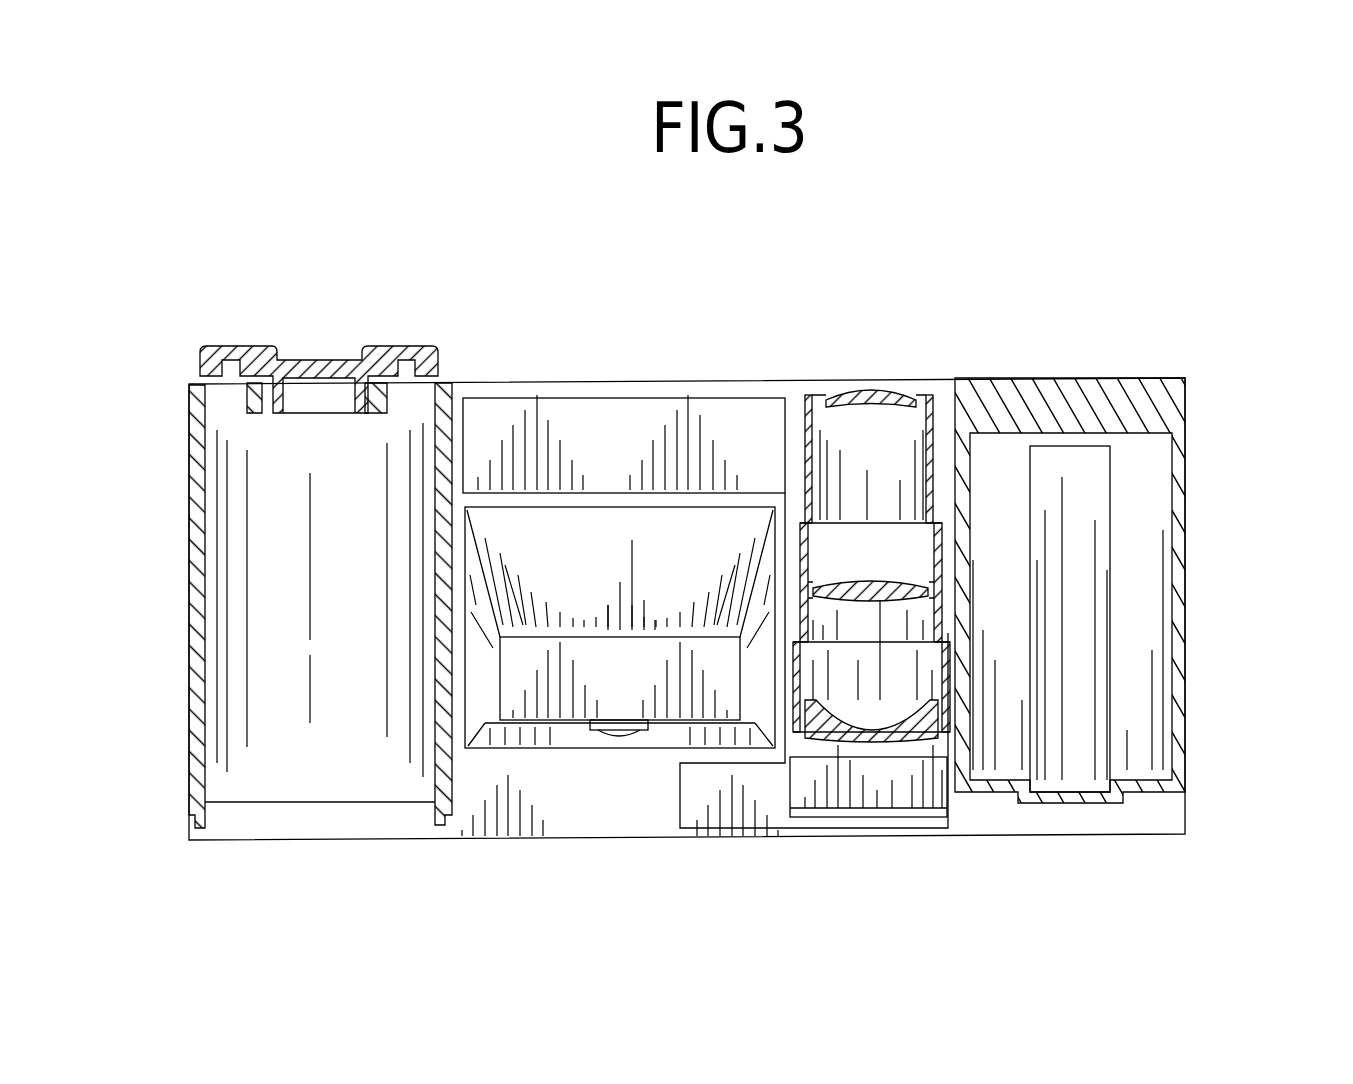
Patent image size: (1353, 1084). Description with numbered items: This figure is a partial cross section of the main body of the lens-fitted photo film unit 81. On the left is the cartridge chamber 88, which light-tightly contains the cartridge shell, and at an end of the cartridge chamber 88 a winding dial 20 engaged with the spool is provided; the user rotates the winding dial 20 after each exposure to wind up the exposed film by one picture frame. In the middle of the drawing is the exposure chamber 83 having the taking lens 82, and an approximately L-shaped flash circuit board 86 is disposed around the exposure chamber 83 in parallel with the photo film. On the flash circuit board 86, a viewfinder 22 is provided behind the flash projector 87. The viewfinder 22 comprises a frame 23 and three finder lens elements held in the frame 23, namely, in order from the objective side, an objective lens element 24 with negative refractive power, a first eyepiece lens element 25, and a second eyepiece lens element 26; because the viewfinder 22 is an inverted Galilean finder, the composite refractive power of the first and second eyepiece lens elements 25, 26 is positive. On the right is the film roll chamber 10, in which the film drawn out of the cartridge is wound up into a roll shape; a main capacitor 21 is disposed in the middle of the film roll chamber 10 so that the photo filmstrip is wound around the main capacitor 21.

The film roll chamber 10 is at (1143, 612).
The winding dial 20 is at (317, 360).
The main capacitor 21 is at (1097, 508).
The viewfinder 22 is at (835, 517).
The frame 23 is at (796, 412).
The objective lens element 24 is at (820, 740).
The first eyepiece lens element 25 is at (832, 583).
The second eyepiece lens element 26 is at (868, 386).
The lens-fitted photo film unit 81 is at (1000, 340).
The taking lens 82 is at (618, 735).
The exposure chamber 83 is at (533, 712).
The flash circuit board 86 is at (636, 432).
The flash projector 87 is at (893, 795).
The cartridge chamber 88 is at (237, 533).